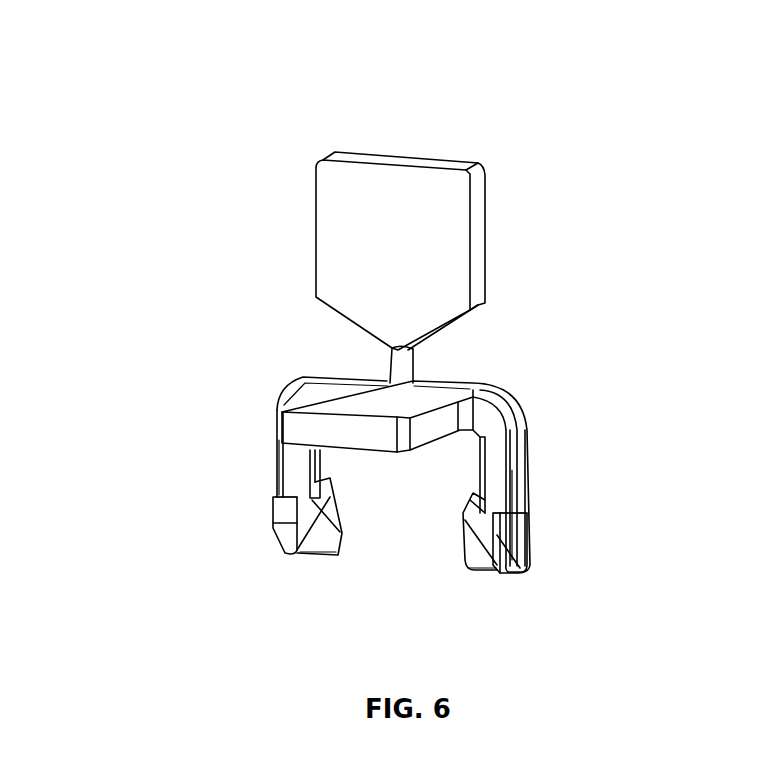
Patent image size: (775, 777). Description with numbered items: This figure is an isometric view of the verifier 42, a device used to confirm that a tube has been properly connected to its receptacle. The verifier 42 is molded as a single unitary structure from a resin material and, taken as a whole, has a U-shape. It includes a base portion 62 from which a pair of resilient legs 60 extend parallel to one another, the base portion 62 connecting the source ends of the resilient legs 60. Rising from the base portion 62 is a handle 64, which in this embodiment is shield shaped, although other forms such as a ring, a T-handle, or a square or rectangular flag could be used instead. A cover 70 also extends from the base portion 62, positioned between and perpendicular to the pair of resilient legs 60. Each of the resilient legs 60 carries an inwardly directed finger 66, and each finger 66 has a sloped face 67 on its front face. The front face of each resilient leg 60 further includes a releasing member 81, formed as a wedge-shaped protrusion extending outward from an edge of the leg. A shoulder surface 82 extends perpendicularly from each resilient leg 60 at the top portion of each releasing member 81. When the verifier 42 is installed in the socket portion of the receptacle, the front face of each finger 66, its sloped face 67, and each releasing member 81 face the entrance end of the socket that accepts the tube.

The verifier 42 is at (329, 98).
The handle 64 is at (318, 240).
The base portion 62 is at (430, 386).
The cover 70 is at (322, 398).
The resilient legs 60 is at (278, 470).
The shoulder surface 82 is at (278, 493).
The releasing member 81 is at (280, 533).
The fingers 66 is at (460, 545).
The sloped face 67 is at (317, 550).